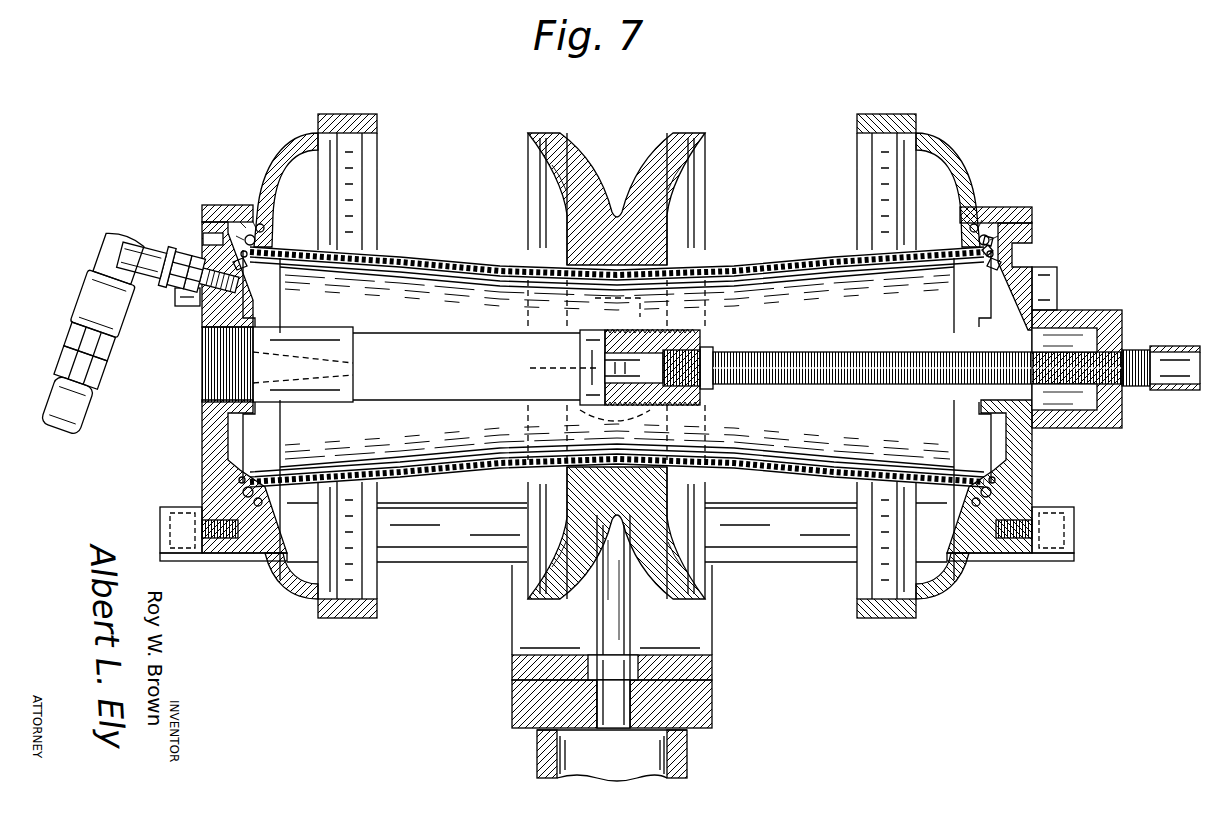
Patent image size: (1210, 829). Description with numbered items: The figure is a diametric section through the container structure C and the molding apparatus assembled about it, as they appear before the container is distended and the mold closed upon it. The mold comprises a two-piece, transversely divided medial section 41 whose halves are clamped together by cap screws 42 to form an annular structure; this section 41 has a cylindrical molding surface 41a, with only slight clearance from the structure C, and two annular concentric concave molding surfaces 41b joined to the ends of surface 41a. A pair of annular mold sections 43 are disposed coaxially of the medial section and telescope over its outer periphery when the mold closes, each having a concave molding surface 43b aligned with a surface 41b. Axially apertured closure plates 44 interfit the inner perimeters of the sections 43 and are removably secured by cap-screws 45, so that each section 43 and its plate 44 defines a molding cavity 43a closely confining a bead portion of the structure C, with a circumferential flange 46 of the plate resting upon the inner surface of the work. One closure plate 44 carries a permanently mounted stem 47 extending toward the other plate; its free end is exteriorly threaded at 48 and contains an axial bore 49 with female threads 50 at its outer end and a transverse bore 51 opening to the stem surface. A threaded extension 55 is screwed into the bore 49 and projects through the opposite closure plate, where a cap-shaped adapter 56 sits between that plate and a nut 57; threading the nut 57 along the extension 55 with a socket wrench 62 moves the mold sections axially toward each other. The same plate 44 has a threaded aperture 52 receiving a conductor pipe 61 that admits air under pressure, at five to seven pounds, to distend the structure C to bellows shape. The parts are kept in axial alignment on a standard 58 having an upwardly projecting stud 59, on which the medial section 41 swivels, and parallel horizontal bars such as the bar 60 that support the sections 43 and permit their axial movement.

The medial mold section 41 is at (577, 165).
The cylindrical molding surface 41a is at (673, 263).
The concave molding surfaces 41b is at (553, 163).
The cap screws 42 is at (693, 266).
The annular mold sections 43 is at (297, 157).
The molding cavity 43a is at (260, 227).
The concave molding surface 43b is at (300, 153).
The closure plates 44 is at (205, 445).
The cap-screws 45 is at (187, 304).
The circumferential flange 46 is at (236, 267).
The stem 47 is at (413, 333).
The threaded end 48 is at (685, 327).
The axial bore 49 is at (650, 380).
The female threads 50 is at (693, 385).
The transverse bore 51 is at (597, 367).
The threaded aperture 52 is at (220, 277).
The threaded extension 55 is at (818, 353).
The cap-shaped adapter 56 is at (1110, 428).
The nut 57 is at (1128, 385).
The standard 58 is at (687, 755).
The stud 59 is at (630, 625).
The horizontal bar 60 is at (428, 542).
The conductor pipe 61 is at (62, 385).
The socket wrench 62 is at (1165, 352).
The container structure C is at (463, 267).